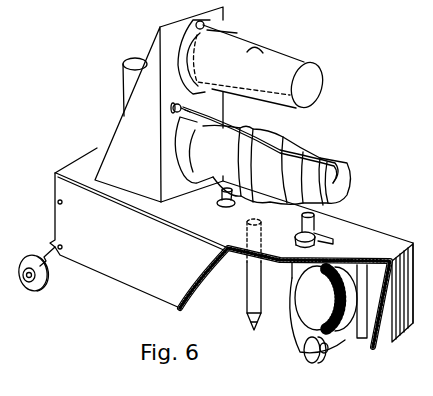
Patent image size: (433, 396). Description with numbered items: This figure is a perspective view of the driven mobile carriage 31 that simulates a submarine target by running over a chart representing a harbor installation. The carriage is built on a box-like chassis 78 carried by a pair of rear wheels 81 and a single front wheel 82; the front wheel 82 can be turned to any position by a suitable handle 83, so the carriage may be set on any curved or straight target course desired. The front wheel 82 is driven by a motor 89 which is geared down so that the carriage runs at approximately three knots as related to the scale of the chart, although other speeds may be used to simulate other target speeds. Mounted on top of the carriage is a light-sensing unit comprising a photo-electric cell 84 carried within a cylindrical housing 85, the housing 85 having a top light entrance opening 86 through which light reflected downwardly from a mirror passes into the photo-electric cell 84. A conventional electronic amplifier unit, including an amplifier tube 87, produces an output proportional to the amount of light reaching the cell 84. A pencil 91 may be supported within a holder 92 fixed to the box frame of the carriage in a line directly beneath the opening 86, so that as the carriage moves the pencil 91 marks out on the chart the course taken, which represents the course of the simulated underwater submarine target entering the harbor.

The mobile carriage 31 is at (59, 139).
The box-like chassis 78 is at (130, 255).
The rear wheels 81 is at (47, 291).
The front wheel 82 is at (300, 353).
The handle 83 is at (333, 242).
The photo-electric cell 84 is at (275, 67).
The cylindrical housing 85 is at (323, 87).
The light entrance opening 86 is at (253, 50).
The amplifier tube 87 is at (303, 165).
The motor 89 is at (322, 290).
The pencil 91 is at (250, 327).
The holder 92 is at (247, 292).